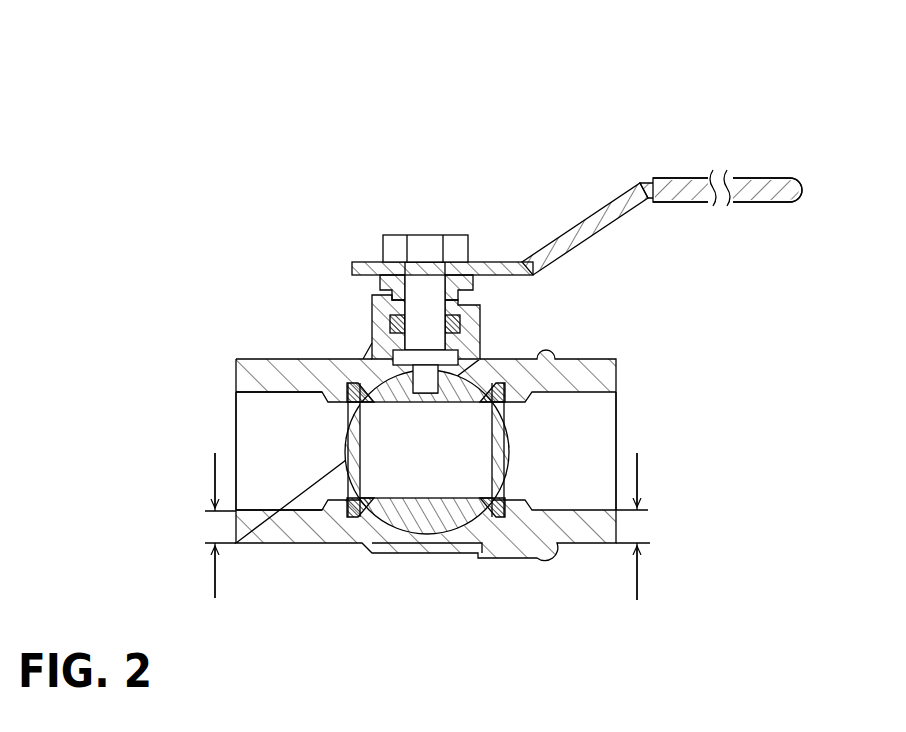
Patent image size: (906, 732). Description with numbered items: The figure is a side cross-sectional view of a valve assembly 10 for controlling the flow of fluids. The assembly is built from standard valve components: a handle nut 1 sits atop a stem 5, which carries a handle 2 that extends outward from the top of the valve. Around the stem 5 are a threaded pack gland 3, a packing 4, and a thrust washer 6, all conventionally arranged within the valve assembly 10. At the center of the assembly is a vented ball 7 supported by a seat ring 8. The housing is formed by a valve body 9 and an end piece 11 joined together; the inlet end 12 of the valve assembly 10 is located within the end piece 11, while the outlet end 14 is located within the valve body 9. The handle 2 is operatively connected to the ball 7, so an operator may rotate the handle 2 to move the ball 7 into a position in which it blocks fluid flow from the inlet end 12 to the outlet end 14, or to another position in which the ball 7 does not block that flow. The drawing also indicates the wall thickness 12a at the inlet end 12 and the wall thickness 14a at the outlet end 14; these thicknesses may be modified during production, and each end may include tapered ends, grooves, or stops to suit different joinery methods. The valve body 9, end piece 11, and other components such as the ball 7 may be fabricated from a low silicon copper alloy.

The handle nut 1 is at (433, 236).
The handle 2 is at (672, 178).
The threaded pack gland 3 is at (380, 287).
The packing 4 is at (463, 323).
The stem 5 is at (420, 305).
The thrust washer 6 is at (462, 342).
The vented ball 7 is at (376, 525).
The seat ring 8 is at (500, 515).
The valve body 9 is at (270, 533).
The valve assembly 10 is at (668, 73).
The end piece 11 is at (560, 352).
The inlet end 12 is at (593, 437).
The wall thickness 12a is at (651, 526).
The outlet end 14 is at (258, 437).
The wall thickness 14a is at (203, 525).